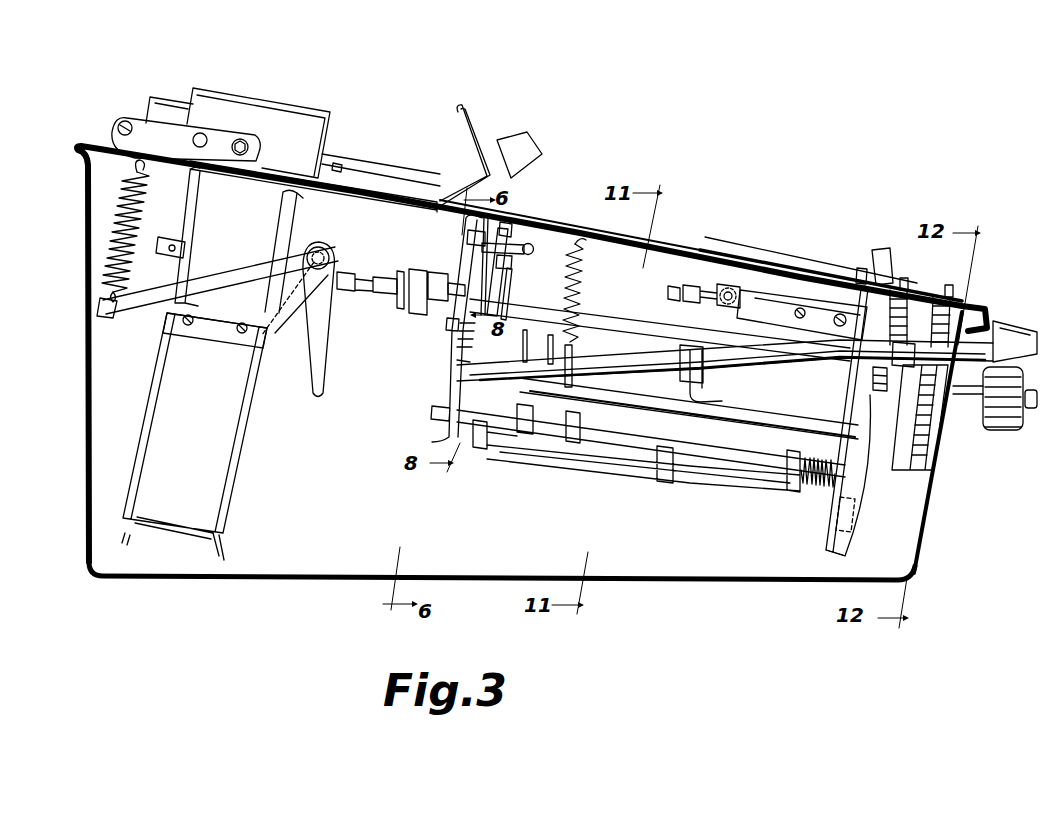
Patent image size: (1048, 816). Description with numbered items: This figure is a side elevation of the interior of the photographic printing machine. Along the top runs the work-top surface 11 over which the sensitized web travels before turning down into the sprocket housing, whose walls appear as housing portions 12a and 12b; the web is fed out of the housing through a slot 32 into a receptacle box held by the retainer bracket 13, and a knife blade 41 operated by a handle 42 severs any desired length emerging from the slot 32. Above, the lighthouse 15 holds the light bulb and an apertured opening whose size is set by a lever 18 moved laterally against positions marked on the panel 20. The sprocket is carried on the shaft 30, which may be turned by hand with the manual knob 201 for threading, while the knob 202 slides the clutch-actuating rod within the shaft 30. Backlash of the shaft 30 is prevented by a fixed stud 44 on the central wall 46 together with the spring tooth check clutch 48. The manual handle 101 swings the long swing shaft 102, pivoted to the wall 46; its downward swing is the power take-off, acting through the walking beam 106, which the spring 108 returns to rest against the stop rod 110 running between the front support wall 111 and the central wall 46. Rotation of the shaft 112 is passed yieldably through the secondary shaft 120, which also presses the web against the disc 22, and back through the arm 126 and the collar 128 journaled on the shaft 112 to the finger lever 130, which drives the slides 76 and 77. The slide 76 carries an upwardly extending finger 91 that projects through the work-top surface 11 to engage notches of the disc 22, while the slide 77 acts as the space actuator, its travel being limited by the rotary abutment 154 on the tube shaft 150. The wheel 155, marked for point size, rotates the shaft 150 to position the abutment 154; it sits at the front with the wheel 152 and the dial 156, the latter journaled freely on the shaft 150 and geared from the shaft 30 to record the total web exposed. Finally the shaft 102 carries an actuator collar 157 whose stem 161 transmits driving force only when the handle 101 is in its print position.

The work-top surface 11 is at (697, 253).
The plate 12a is at (288, 212).
The spring 12b is at (192, 203).
The retainer bracket 13 is at (236, 479).
The lighthouse 15 is at (264, 106).
The lever 18 is at (535, 152).
The panel 20 is at (470, 110).
The disc 22 is at (765, 259).
The shaft 30 is at (364, 298).
The slot 32 is at (220, 324).
The knife blade 41 is at (240, 269).
The handle 42 is at (324, 383).
The fixed stud 44 is at (418, 270).
The central wall 46 is at (455, 381).
The spring tooth check clutch 48 is at (395, 306).
The slide 76 is at (504, 294).
The slide 77 is at (510, 266).
The finger 91 is at (512, 223).
The handle 101 is at (1014, 330).
The swing shaft 102 is at (762, 364).
The walking beam 106 is at (578, 352).
The spring 108 is at (586, 301).
The stop rod 110 is at (667, 397).
The front support wall 111 is at (828, 537).
The shaft 112 is at (651, 434).
The secondary shaft 120 is at (590, 462).
The arm 126 is at (521, 351).
The collar 128 is at (495, 420).
The finger lever 130 is at (458, 348).
The tube shaft 150 is at (697, 318).
The wheel 152 is at (951, 287).
The rotary abutment 154 is at (520, 272).
The wheel 155 is at (906, 279).
The dial 156 is at (861, 268).
The actuator collar 157 is at (700, 413).
The stem 161 is at (718, 400).
The manual knob 201 is at (998, 426).
The knob 202 is at (1038, 420).